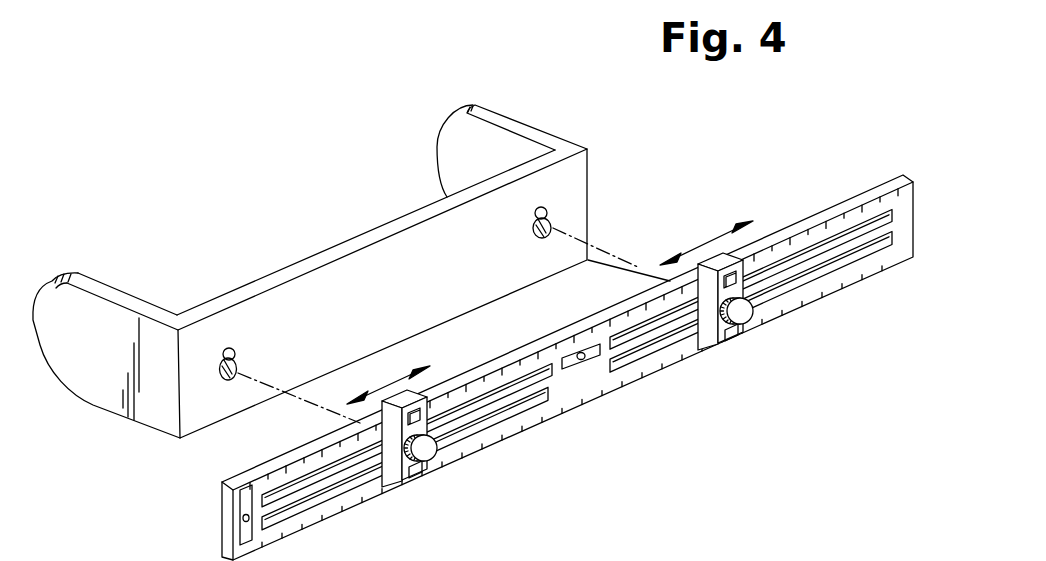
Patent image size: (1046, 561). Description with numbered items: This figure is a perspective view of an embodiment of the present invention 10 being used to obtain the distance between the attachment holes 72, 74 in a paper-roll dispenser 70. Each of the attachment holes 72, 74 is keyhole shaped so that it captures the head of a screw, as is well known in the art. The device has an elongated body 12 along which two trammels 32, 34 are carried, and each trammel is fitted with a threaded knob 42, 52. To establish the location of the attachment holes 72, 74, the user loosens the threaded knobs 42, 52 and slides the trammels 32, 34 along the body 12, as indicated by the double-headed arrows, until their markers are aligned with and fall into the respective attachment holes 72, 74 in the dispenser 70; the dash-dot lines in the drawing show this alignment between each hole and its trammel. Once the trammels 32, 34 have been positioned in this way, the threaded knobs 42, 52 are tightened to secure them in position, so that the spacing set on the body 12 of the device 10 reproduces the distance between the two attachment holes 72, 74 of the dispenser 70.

The embodiment of the present invention 10 is at (822, 197).
The body 12 is at (588, 390).
The trammel 32 is at (394, 490).
The trammel 34 is at (722, 347).
The threaded knob 42 is at (426, 453).
The threaded knob 52 is at (752, 318).
The paper-roll dispenser 70 is at (548, 120).
The attachment hole 72 is at (238, 358).
The attachment hole 74 is at (558, 218).